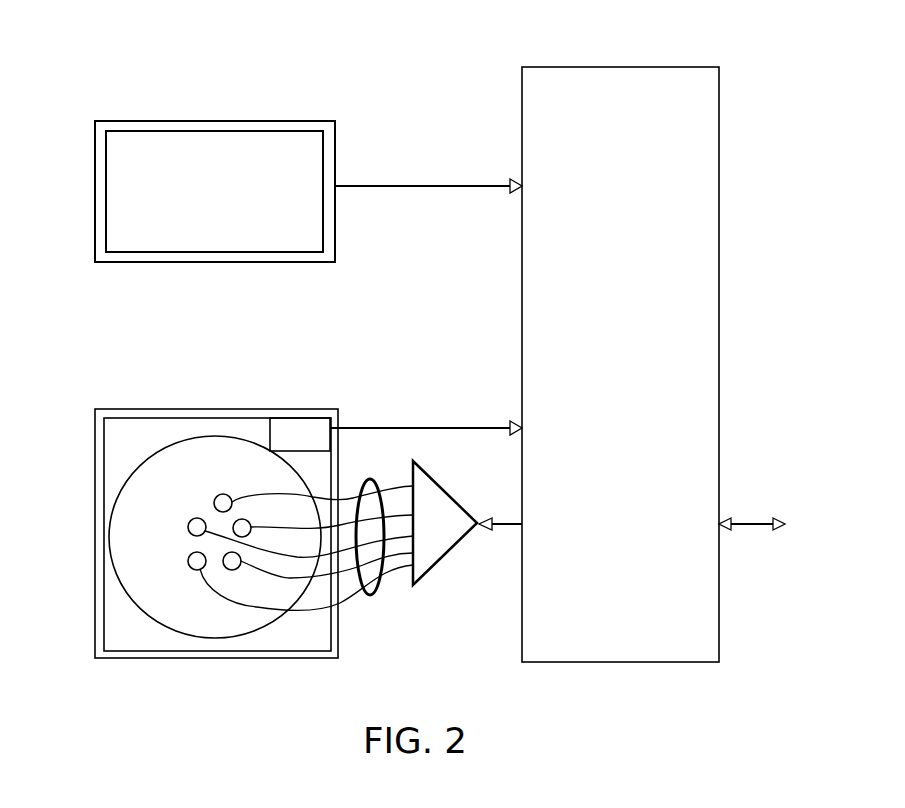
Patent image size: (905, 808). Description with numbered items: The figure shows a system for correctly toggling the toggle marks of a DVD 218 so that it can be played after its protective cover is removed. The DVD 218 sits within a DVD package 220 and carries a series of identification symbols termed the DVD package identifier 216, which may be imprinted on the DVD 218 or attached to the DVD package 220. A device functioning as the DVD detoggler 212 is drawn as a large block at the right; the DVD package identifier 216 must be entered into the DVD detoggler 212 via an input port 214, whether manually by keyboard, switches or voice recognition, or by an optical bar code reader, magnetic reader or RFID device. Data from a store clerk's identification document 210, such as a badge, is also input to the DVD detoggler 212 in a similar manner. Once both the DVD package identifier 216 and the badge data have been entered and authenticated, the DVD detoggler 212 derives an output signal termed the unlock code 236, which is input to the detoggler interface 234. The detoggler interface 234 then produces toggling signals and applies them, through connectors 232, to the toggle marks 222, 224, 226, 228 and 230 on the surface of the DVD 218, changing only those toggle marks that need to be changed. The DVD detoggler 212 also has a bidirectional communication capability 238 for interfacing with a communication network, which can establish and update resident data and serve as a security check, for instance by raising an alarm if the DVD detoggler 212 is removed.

The store clerk's identification document 210 is at (217, 121).
The DVD detoggler 212 is at (719, 277).
The input port 214 is at (415, 427).
The DVD package identifier 216 is at (270, 433).
The DVD 218 is at (170, 443).
The DVD package 220 is at (95, 440).
The toggle mark 222 is at (214, 502).
The toggle mark 224 is at (188, 524).
The toggle mark 226 is at (188, 561).
The toggle mark 228 is at (232, 570).
The toggle mark 230 is at (247, 536).
The connectors 232 is at (376, 596).
The detoggler interface 234 is at (430, 577).
The unlock code 236 is at (505, 527).
The bidirectional communication capability 238 is at (748, 530).